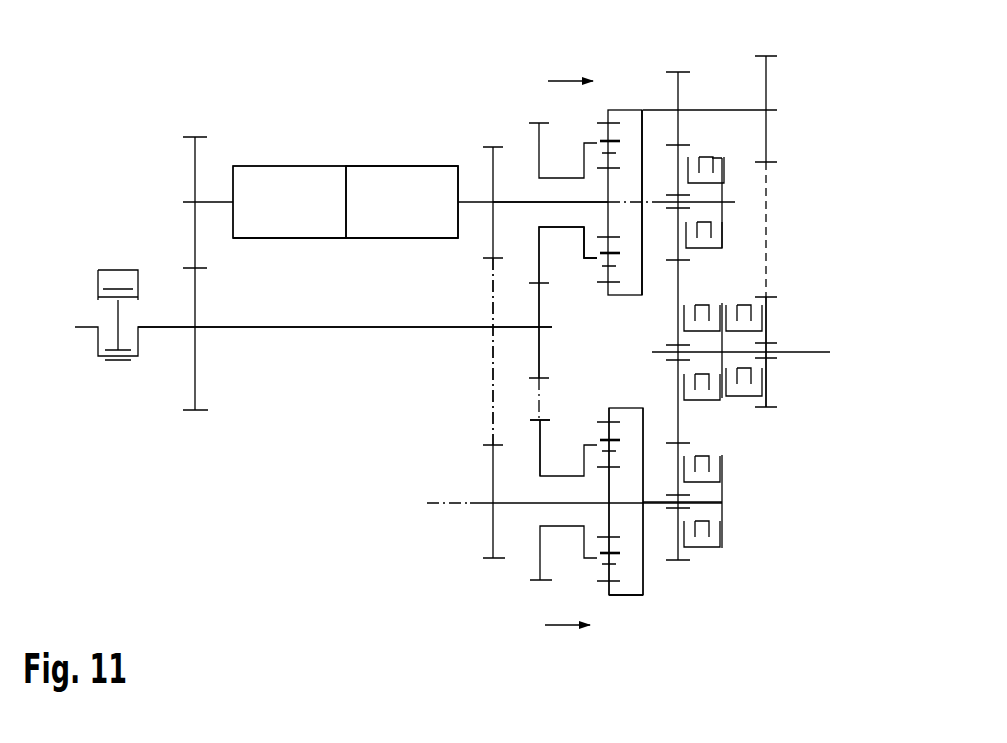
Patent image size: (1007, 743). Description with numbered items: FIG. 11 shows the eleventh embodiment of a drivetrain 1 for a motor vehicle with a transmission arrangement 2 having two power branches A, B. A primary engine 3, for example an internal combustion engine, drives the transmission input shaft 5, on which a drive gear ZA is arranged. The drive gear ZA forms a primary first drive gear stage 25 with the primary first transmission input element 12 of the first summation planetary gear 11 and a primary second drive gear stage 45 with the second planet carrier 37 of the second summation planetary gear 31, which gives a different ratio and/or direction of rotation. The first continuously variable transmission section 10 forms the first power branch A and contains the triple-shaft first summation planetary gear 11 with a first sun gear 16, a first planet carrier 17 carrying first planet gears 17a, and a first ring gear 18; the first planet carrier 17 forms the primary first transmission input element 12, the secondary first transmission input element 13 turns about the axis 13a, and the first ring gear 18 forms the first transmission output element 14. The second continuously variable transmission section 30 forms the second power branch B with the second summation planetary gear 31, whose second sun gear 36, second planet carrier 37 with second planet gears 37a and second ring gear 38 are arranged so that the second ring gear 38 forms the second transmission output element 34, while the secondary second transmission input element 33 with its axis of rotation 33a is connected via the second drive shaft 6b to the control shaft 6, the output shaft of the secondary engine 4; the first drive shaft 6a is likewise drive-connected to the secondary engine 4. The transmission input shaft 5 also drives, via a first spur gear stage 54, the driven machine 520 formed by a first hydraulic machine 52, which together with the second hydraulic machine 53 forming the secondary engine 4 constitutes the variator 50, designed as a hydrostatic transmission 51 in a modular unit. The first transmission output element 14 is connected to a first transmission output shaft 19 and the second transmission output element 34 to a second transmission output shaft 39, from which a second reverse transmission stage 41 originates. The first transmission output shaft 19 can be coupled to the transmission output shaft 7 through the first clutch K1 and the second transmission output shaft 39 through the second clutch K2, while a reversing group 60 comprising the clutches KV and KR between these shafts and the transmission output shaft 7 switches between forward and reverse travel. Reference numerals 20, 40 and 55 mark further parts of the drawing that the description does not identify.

The drivetrain 1 is at (155, 415).
The transmission arrangement 2 is at (472, 123).
The primary engine 3 is at (83, 305).
The secondary engine 4 is at (390, 160).
The transmission input shaft 5 is at (170, 330).
The control shaft 6 is at (475, 206).
The first drive shaft 6a is at (525, 505).
The second drive shaft 6b is at (538, 200).
The transmission output shaft 7 is at (812, 353).
The first continuously variable transmission section 10 is at (624, 600).
The first summation planetary gear 11 is at (648, 600).
The primary first transmission input element 12 is at (541, 437).
The secondary first transmission input element 13 is at (595, 503).
The axis of rotation 13a is at (448, 505).
The first transmission output element 14 is at (643, 568).
The first sun gear 16 is at (613, 482).
The first planet carrier 17 is at (580, 535).
The first planet gears 17a is at (603, 583).
The first ring gear 18 is at (623, 408).
The first transmission output shaft 19 is at (705, 500).
The gear shaft 20 is at (668, 430).
The primary first drive gear stage 25 is at (530, 423).
The second continuously variable transmission section 30 is at (617, 107).
The second summation planetary gear 31 is at (640, 107).
The secondary second transmission input element 33 is at (611, 218).
The axis of rotation 33a is at (623, 200).
The second transmission output element 34 is at (644, 233).
The second sun gear 36 is at (611, 218).
The second planet carrier 37 is at (583, 168).
The second planet gears 37a is at (610, 162).
The second ring gear 38 is at (617, 298).
The second transmission output shaft 39 is at (708, 203).
The gear shaft 40 is at (672, 280).
The second reverse transmission stage 41 is at (792, 157).
The primary second drive gear stage 45 is at (530, 292).
The variator 50 is at (287, 160).
The hydrostatic transmission 51 is at (312, 245).
The first hydraulic machine 52 is at (289, 202).
The second hydraulic machine 53 is at (402, 202).
The first spur gear stage 54 is at (195, 418).
The axis 55 is at (493, 352).
The reversing group 60 is at (768, 415).
The driven machine 520 is at (273, 224).
The first power branch A is at (560, 627).
The second power branch B is at (570, 80).
The drive gear ZA is at (512, 351).
The first clutch K1 is at (713, 548).
The second clutch K2 is at (723, 160).
The clutch KV is at (705, 402).
The clutch KR is at (740, 400).